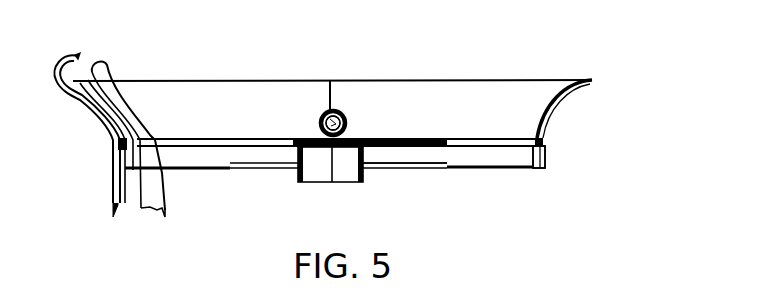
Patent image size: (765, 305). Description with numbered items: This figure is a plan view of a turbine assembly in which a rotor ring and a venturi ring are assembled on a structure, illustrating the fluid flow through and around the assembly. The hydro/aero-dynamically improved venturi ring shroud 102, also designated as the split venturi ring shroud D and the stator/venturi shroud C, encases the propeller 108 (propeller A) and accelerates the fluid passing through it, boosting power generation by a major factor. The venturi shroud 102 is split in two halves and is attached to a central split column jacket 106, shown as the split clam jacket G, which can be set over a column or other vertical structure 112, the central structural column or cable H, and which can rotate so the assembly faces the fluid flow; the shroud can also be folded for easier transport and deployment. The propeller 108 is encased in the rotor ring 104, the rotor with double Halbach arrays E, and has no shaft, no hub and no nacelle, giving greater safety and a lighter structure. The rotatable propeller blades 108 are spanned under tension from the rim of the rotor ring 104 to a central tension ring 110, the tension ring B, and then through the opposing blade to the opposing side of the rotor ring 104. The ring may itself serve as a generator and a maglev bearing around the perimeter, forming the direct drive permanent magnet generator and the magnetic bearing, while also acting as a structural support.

The venturi ring shroud 102 is at (545, 97).
The rotor ring 104 is at (546, 148).
The central split column jacket 106 is at (327, 110).
The propeller 108 is at (415, 168).
The central tension ring 110 is at (297, 172).
The column or other vertical structure 112 is at (343, 113).
The propeller A is at (382, 168).
The tension ring B is at (300, 180).
The stator/venturi shroud C is at (550, 132).
The split venturi ring shroud D is at (457, 112).
The rotor with double Halbach arrays E is at (542, 153).
The split clam jacket G is at (325, 113).
The central structural column or cable H is at (340, 117).